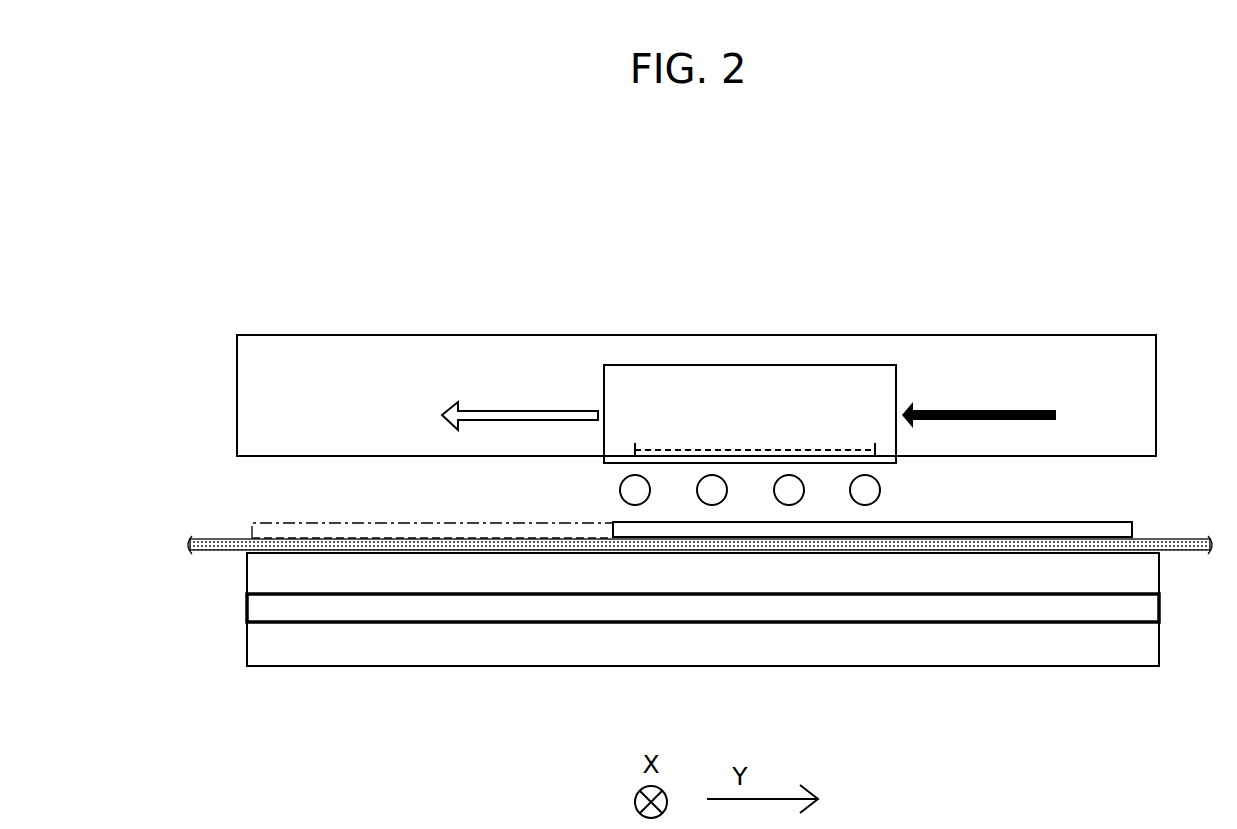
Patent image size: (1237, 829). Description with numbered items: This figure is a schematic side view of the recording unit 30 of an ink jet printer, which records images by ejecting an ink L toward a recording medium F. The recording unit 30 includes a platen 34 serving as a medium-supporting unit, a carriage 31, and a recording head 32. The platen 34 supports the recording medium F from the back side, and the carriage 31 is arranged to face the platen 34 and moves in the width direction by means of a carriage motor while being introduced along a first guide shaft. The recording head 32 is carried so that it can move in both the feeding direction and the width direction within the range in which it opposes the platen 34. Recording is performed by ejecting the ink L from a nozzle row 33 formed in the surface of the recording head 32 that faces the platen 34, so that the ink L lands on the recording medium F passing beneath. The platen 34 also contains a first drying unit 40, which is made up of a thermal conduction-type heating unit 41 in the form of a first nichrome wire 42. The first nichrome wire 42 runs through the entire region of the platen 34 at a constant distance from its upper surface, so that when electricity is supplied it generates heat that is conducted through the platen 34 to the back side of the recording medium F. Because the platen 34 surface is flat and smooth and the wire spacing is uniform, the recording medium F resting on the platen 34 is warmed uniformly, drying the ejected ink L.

The recording unit 30 is at (304, 242).
The carriage 31 is at (482, 370).
The recording head 32 is at (698, 388).
The nozzle row 33 is at (888, 433).
The platen 34 is at (372, 575).
The first drying unit 40 is at (703, 655).
The thermal conduction-type heating unit 41 is at (703, 655).
The first nichrome wire 42 is at (854, 610).
The ink L is at (417, 525).
The recording medium F is at (1165, 537).